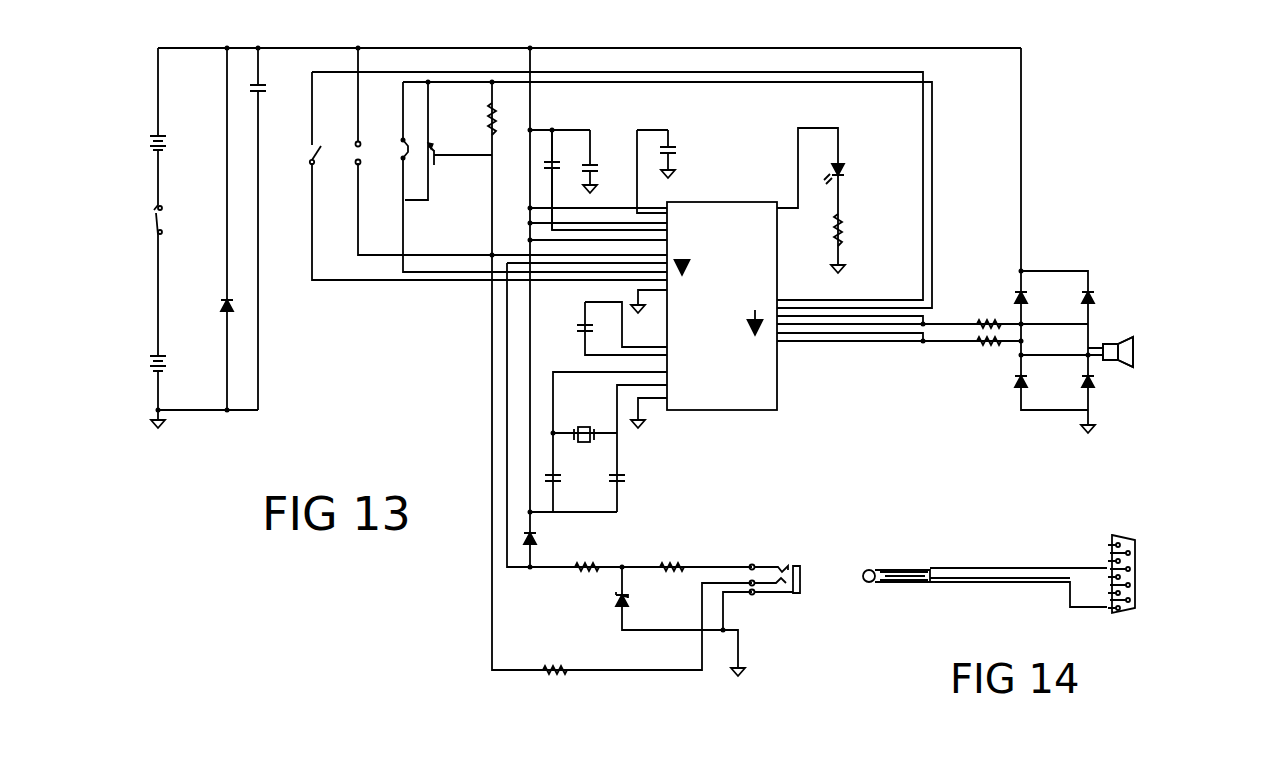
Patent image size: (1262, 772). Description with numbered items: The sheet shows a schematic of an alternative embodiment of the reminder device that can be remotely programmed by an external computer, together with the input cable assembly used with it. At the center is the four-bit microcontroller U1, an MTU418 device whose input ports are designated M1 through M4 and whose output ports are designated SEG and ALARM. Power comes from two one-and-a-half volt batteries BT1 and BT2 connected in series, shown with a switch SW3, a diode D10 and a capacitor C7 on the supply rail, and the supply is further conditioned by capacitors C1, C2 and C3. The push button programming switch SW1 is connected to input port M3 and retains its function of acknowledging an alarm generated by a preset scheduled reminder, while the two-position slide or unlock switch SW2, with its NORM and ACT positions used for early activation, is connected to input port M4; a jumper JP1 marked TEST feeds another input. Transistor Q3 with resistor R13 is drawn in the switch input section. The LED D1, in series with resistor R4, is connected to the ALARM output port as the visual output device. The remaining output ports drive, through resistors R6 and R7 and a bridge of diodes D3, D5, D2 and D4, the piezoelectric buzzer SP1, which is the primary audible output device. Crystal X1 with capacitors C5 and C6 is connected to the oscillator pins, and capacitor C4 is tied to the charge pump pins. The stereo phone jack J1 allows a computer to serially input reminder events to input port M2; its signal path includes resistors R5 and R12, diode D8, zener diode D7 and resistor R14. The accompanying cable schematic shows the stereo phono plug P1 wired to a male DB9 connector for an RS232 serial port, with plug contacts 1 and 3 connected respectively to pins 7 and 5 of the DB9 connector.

In FIG. 13, the microcontroller U1 is at (740, 375).
In FIG. 13, the 10uF 6V capacitor C7 is at (252, 86).
In FIG. 13, the 1.5V battery BT1 is at (176, 143).
In FIG. 13, the switch SW3 is at (182, 215).
In FIG. 13, the 1N4004 diode D10 is at (198, 229).
In FIG. 13, the 1.5V battery BT2 is at (180, 365).
In FIG. 13, the unlock switch SW2 is at (313, 148).
In FIG. 13, the test jumper JP1 is at (355, 165).
In FIG. 13, the programming switch SW1 is at (402, 138).
In FIG. 13, the 220k resistor R13 is at (469, 117).
In FIG. 13, the MMBT2907 transistor Q3 is at (448, 158).
In FIG. 13, the 1uF capacitor C1 is at (563, 180).
In FIG. 13, the 0.1uF capacitor C2 is at (603, 184).
In FIG. 13, the 0.1uF capacitor C3 is at (694, 154).
In FIG. 13, the LED D1 is at (856, 169).
In FIG. 13, the 440 ohm resistor R4 is at (867, 233).
In FIG. 13, the 0.1uF capacitor C4 is at (570, 342).
In FIG. 13, the 32.768kHz crystal X1 is at (594, 436).
In FIG. 13, the 220pF capacitor C5 is at (570, 481).
In FIG. 13, the 22pF capacitor C6 is at (641, 480).
In FIG. 13, the MMBD4148 diode D8 is at (602, 535).
In FIG. 13, the 10k resistor R5 is at (605, 557).
In FIG. 13, the 15k resistor R12 is at (699, 557).
In FIG. 13, the MMBZ5231 zener diode D7 is at (569, 610).
In FIG. 13, the 100k resistor R14 is at (579, 660).
In FIG. 13, the stereo phone jack J1 is at (784, 563).
In FIG. 13, the 1k resistor R6 is at (984, 304).
In FIG. 13, the 1k resistor R7 is at (984, 361).
In FIG. 13, the MMBD4148 diode D3 is at (1026, 290).
In FIG. 13, the MMBD4148 diode D5 is at (1093, 290).
In FIG. 13, the MMBD4148 diode D2 is at (1017, 393).
In FIG. 13, the MMBD4148 diode D4 is at (1094, 393).
In FIG. 13, the piezoelectric buzzer SP1 is at (1157, 354).
In FIG. 14, the stereo phono plug P1 is at (896, 615).
In FIG. 14, the DB9 male connector DB9 is at (1119, 597).
In FIG. 14, the plug pin 1 is at (945, 559).
In FIG. 14, the plug pin 3 is at (945, 598).
In FIG. 14, the DB9 pin 5 is at (1087, 600).
In FIG. 14, the DB9 pin 7 is at (1085, 559).